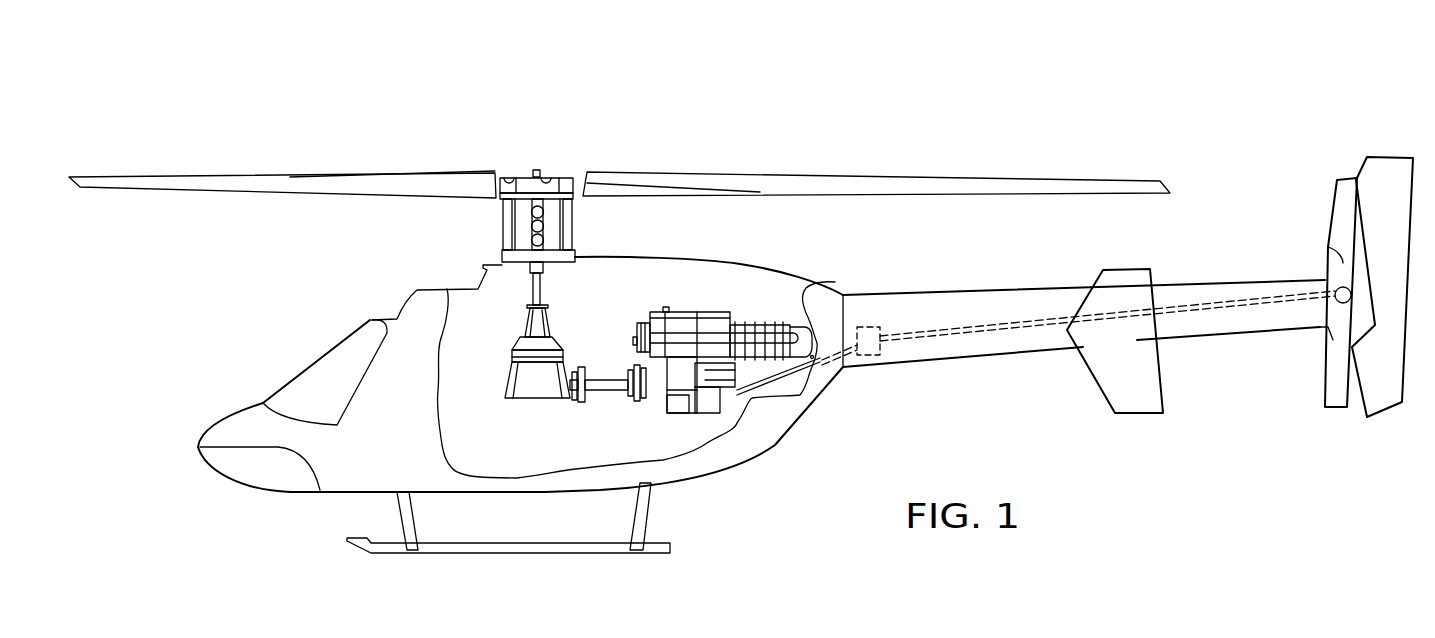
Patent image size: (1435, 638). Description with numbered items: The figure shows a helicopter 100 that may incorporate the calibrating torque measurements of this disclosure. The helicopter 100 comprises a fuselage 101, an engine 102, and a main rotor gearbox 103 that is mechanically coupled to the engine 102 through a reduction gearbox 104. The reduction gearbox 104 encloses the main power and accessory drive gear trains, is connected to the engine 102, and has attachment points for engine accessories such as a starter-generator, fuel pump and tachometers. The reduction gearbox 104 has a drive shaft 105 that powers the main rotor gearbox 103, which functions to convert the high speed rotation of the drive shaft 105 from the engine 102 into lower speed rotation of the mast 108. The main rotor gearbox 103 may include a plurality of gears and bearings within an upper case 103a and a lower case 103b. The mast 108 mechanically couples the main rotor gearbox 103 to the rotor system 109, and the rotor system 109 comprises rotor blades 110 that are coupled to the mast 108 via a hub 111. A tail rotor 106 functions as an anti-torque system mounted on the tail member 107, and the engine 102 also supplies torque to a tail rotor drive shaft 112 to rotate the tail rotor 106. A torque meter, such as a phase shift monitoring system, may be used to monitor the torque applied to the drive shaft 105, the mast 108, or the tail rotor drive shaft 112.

The helicopter 100 is at (849, 90).
The fuselage 101 is at (772, 448).
The engine 102 is at (750, 312).
The main rotor gearbox (MRGB) 103 is at (583, 338).
The upper case 103a is at (523, 400).
The lower case 103b is at (522, 340).
The reduction gearbox 104 is at (680, 403).
The drive shaft 105 is at (610, 390).
The tail rotor 106 is at (1335, 200).
The tail member 107 is at (970, 355).
The mast 108 is at (546, 294).
The rotor system 109 is at (580, 218).
The rotor blades 110 is at (237, 178).
The hub 111 is at (526, 180).
The tail rotor drive shaft 112 is at (1018, 318).